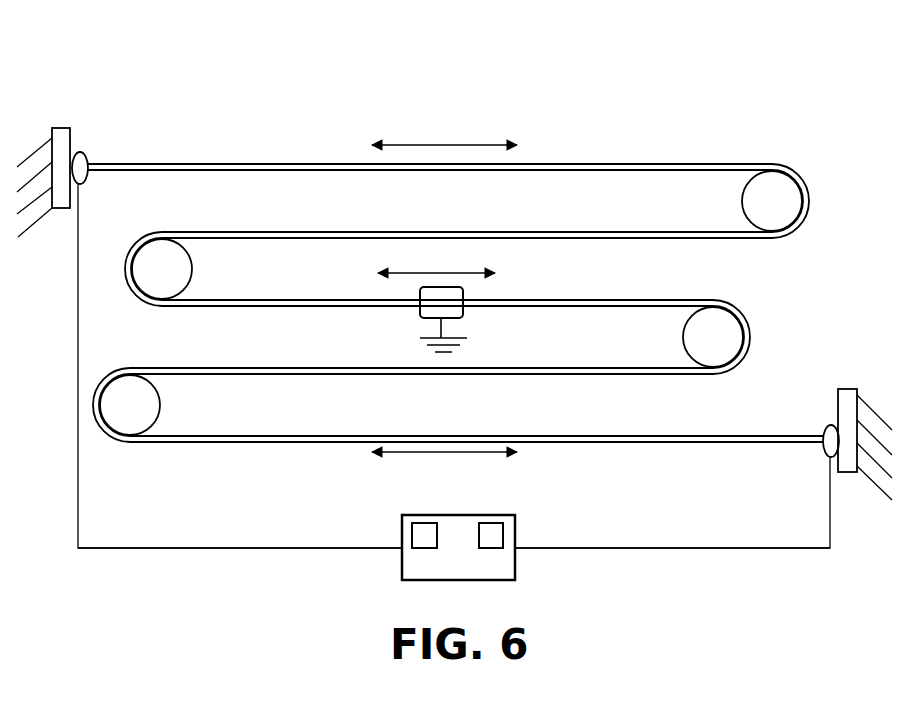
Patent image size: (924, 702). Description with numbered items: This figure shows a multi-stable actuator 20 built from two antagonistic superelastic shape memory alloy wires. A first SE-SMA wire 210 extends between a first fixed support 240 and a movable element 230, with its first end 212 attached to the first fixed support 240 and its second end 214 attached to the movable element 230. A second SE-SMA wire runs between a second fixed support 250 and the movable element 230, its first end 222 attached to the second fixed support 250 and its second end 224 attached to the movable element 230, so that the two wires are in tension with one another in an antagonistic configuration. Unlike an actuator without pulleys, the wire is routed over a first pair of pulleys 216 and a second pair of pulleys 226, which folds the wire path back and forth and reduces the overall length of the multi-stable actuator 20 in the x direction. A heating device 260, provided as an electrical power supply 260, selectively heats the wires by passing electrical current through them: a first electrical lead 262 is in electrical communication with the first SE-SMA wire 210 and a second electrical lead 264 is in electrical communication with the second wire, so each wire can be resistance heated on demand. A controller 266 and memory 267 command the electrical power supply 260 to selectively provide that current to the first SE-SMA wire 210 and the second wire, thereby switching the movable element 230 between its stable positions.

The multi-stable actuator 20 is at (752, 78).
The first SE-SMA wire 210 is at (552, 142).
The first end of the first SE-SMA wire 212 is at (115, 164).
The second end of the first SE-SMA wire 214 is at (395, 306).
The first pair of pulleys 216 is at (152, 250).
The first end of the second SE-SMA wire 222 is at (812, 436).
The second end of the second SE-SMA wire 224 is at (482, 307).
The second pair of pulleys 226 is at (728, 322).
The movable element 230 is at (508, 289).
The first fixed support 240 is at (60, 127).
The second fixed support 250 is at (848, 388).
The heating device 260 is at (515, 561).
The first electrical lead 262 is at (177, 547).
The second electrical lead 264 is at (698, 547).
The controller 266 is at (504, 535).
The memory 267 is at (411, 536).